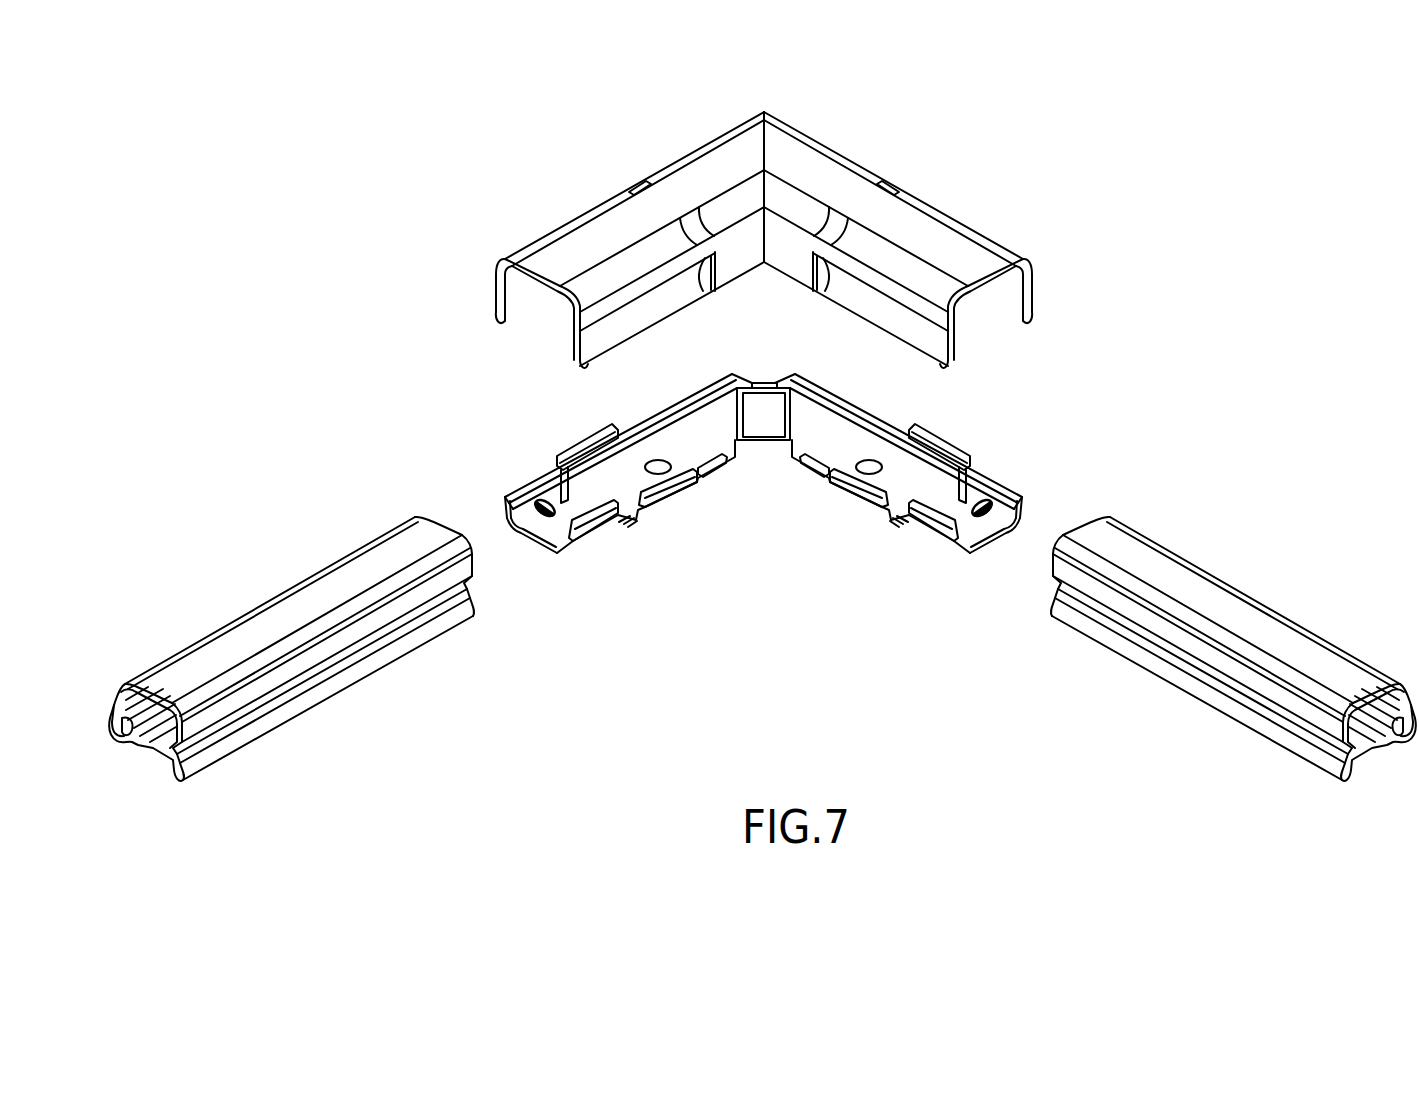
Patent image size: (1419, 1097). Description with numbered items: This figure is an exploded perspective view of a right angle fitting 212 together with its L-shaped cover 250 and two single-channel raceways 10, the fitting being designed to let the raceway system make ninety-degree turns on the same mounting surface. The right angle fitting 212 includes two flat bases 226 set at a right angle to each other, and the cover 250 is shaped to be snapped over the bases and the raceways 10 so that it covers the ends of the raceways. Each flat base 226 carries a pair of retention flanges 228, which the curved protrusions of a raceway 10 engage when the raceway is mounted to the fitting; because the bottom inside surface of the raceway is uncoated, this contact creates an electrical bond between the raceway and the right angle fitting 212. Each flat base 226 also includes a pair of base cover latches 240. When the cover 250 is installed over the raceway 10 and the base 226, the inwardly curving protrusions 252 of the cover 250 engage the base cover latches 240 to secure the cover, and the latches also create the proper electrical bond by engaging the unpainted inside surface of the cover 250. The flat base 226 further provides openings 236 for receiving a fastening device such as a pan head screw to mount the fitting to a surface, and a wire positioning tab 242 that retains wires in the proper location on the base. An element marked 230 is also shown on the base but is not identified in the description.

The raceway 10 is at (318, 550).
The right angle fitting 212 is at (1145, 385).
The flat base 226 is at (548, 530).
The retention flange 228 is at (526, 489).
The protrusion 230 is at (988, 484).
The opening 236 is at (657, 458).
The base cover latch 240 is at (585, 438).
The wire positioning tab 242 is at (764, 427).
The cover 250 is at (928, 232).
The protrusion 252 is at (1033, 298).